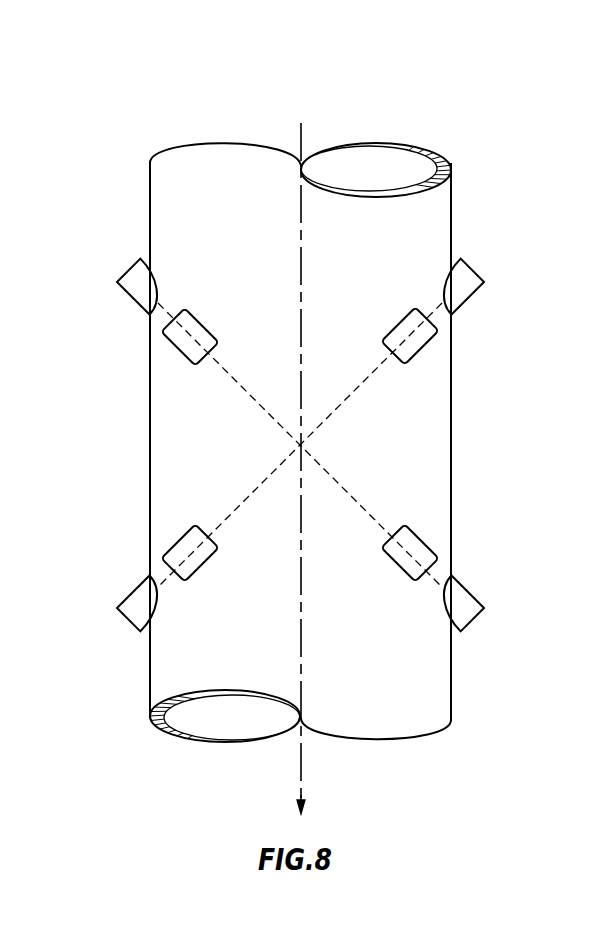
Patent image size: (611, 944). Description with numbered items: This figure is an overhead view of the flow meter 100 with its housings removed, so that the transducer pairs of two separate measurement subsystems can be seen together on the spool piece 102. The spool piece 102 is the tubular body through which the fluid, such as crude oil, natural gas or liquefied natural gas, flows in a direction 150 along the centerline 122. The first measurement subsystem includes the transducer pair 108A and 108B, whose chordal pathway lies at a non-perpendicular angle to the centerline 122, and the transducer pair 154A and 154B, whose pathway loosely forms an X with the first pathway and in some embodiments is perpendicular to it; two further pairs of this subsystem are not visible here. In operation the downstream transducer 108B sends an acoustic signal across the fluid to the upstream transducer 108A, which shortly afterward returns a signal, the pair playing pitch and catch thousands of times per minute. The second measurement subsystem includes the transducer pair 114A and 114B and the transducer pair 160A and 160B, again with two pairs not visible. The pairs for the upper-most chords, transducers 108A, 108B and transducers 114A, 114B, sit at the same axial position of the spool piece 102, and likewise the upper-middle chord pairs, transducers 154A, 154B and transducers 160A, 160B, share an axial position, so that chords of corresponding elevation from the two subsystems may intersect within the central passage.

The flow meter 100 is at (93, 177).
The spool piece 102 is at (453, 183).
The centerline 122 is at (302, 145).
The direction 150 is at (302, 788).
The upstream transducer 108A is at (195, 317).
The downstream transducer 108B is at (397, 567).
The transducer 114A is at (408, 315).
The transducer 114B is at (207, 568).
The transducer 154A is at (465, 298).
The transducer 154B is at (138, 584).
The transducer 160A is at (128, 293).
The transducer 160B is at (462, 585).